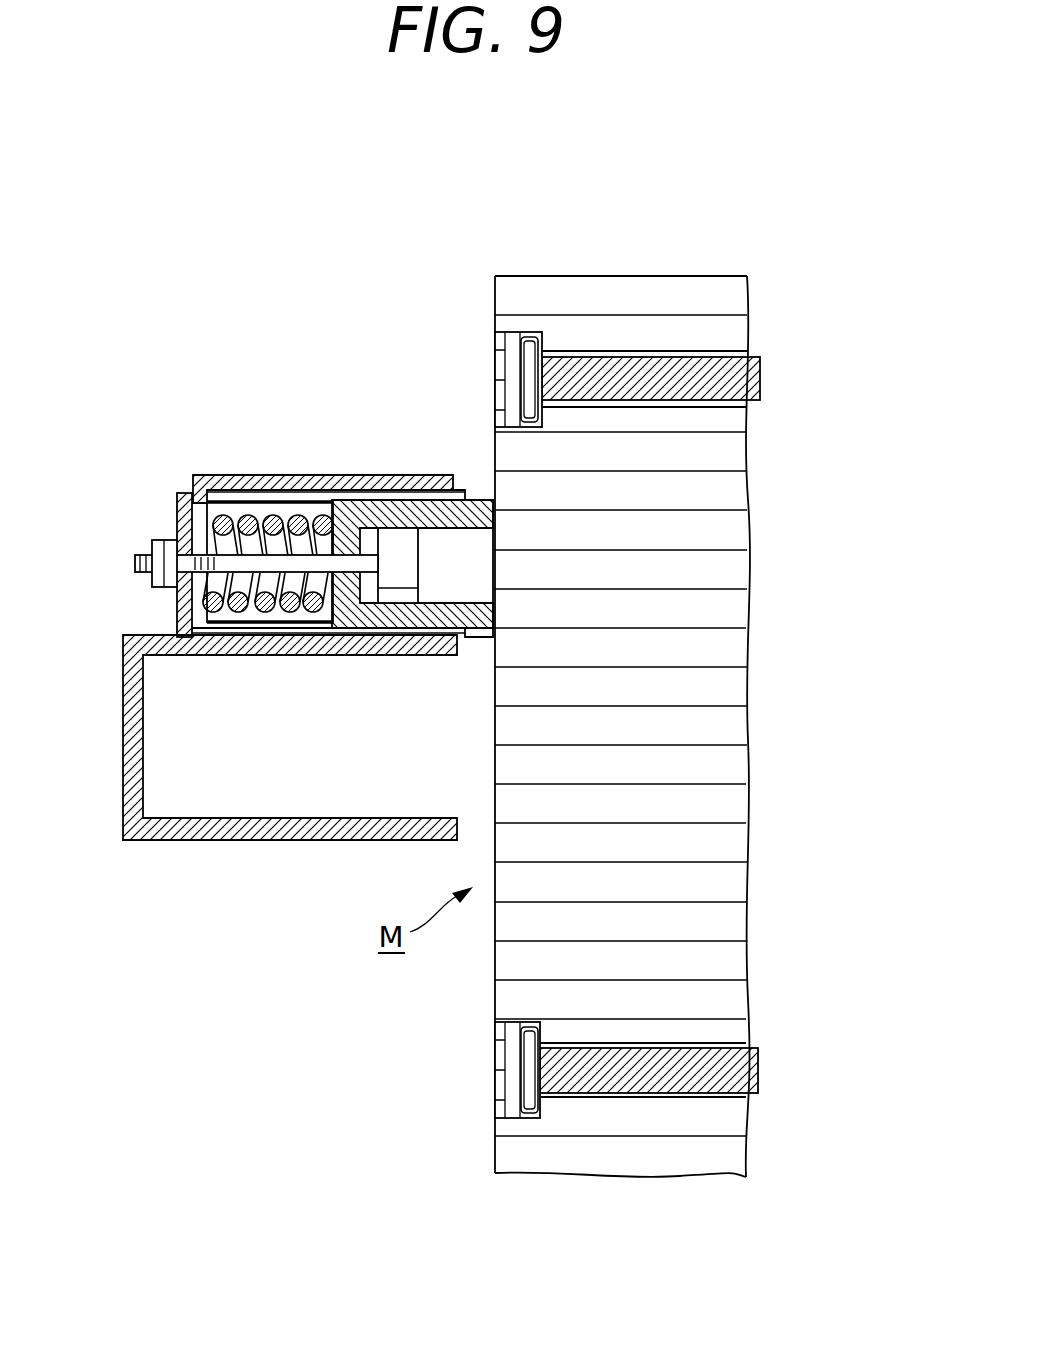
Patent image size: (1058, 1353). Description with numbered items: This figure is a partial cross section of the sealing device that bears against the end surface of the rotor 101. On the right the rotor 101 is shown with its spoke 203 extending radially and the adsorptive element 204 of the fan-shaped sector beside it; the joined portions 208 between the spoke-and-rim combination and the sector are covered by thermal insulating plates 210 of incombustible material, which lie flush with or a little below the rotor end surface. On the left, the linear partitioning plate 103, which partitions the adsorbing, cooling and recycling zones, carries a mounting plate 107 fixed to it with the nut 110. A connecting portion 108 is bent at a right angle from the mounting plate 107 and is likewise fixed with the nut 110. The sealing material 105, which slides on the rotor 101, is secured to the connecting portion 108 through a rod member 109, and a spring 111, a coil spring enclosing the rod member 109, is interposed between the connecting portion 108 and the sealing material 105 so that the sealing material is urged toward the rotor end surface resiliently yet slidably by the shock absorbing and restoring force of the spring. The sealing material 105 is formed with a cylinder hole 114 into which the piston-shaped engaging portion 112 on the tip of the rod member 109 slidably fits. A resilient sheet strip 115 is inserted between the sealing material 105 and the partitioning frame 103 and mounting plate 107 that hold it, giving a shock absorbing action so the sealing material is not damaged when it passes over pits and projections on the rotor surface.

The rotor 101 is at (704, 726).
The partitioning plate 103 is at (150, 838).
The sealing material 105 is at (267, 527).
The mounting plate 107 is at (287, 475).
The connecting portion 108 is at (177, 520).
The rod member 109 is at (250, 562).
The nut 110 is at (153, 545).
The spring 111 is at (250, 573).
The piston 112 is at (398, 575).
The cylinder hole 114 is at (455, 575).
The resilient sheet strip 115 is at (323, 493).
The spoke 203 is at (742, 375).
The adsorptive element 204 is at (733, 690).
The joined portion 208 is at (622, 353).
The thermal insulating plate 210 is at (495, 373).